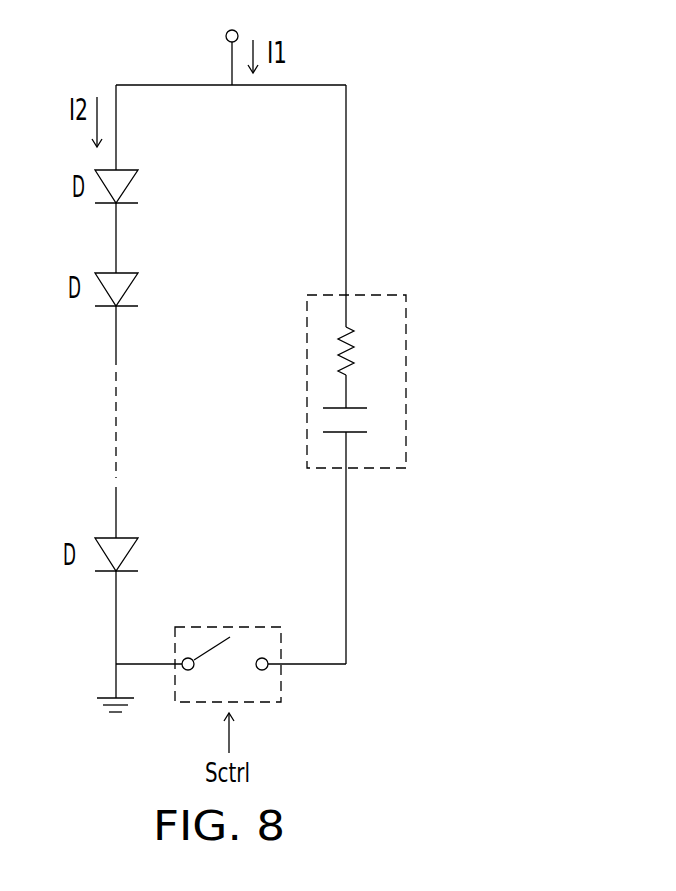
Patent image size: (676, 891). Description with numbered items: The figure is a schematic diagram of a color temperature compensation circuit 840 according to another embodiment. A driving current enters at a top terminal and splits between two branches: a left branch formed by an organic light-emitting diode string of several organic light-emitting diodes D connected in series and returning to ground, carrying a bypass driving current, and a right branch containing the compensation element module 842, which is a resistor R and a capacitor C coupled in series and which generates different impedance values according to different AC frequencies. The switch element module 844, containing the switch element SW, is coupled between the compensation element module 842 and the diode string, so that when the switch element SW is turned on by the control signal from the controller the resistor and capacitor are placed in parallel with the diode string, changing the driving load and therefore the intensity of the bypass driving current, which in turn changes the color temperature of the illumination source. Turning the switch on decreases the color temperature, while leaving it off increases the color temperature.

The color temperature compensation circuit 840 is at (363, 498).
The compensation element module 842 is at (375, 468).
The switch element module 844 is at (281, 693).